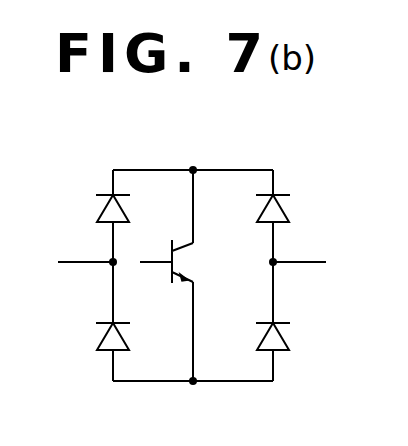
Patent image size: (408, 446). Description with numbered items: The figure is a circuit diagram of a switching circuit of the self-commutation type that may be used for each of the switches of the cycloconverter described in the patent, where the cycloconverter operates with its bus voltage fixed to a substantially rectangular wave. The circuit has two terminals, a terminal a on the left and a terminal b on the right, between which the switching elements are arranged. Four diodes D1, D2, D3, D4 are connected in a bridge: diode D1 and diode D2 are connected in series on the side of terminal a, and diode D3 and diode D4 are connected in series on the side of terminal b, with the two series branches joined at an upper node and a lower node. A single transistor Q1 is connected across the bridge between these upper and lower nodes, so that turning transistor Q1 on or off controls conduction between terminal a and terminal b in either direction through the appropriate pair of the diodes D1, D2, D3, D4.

The diode D1 is at (92, 208).
The diode D2 is at (94, 341).
The diode D3 is at (292, 209).
The diode D4 is at (292, 340).
The transistor Q1 is at (182, 261).
The terminal a is at (75, 263).
The terminal b is at (309, 263).